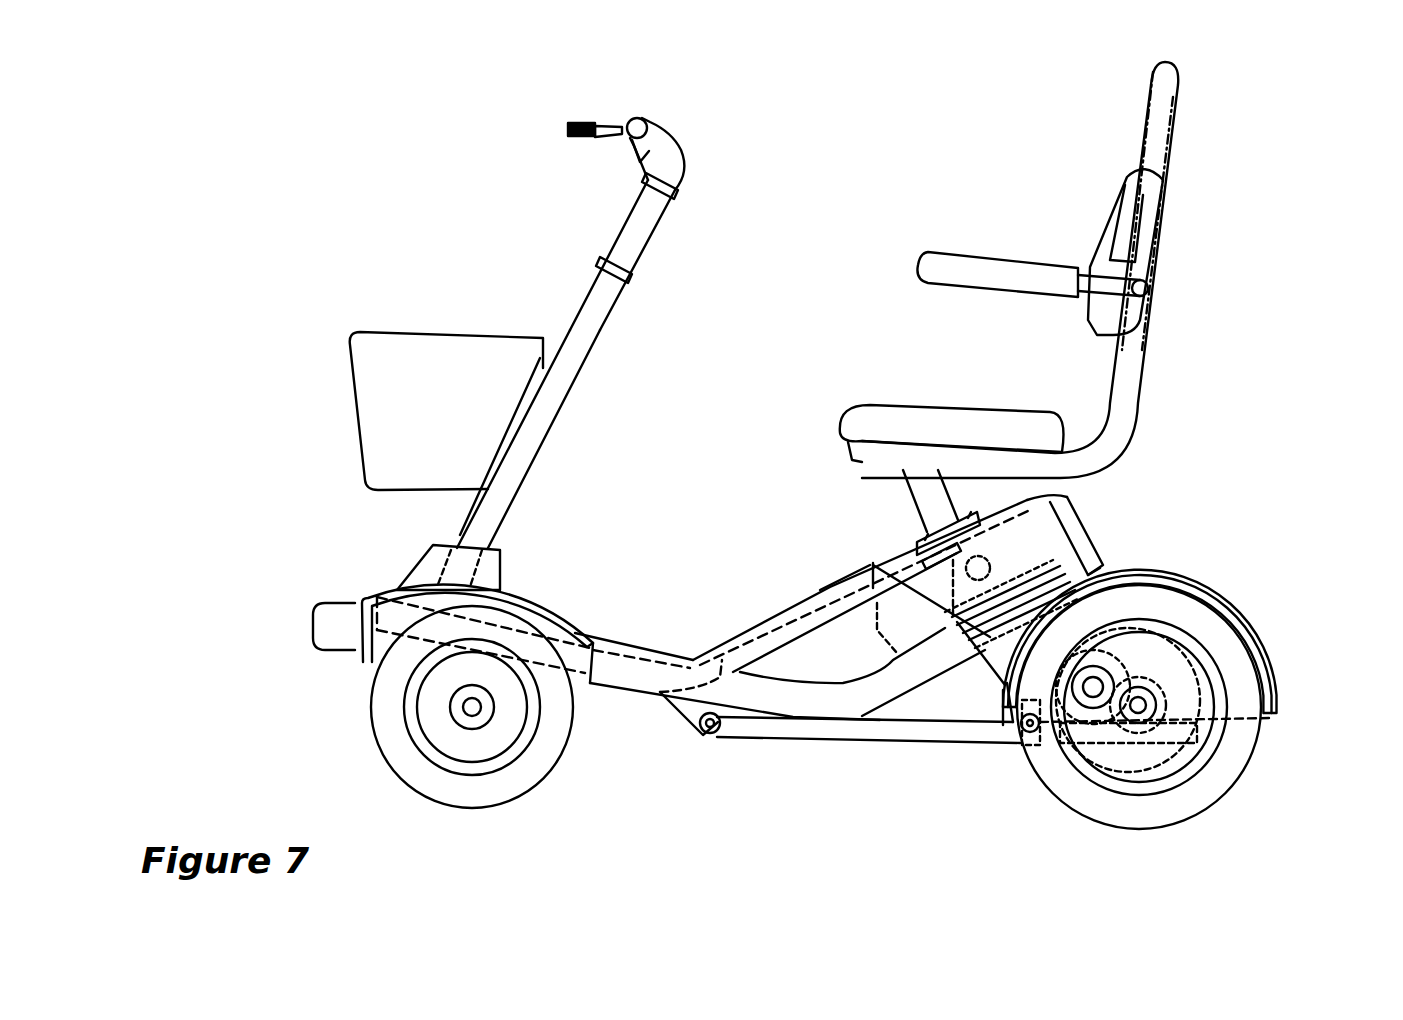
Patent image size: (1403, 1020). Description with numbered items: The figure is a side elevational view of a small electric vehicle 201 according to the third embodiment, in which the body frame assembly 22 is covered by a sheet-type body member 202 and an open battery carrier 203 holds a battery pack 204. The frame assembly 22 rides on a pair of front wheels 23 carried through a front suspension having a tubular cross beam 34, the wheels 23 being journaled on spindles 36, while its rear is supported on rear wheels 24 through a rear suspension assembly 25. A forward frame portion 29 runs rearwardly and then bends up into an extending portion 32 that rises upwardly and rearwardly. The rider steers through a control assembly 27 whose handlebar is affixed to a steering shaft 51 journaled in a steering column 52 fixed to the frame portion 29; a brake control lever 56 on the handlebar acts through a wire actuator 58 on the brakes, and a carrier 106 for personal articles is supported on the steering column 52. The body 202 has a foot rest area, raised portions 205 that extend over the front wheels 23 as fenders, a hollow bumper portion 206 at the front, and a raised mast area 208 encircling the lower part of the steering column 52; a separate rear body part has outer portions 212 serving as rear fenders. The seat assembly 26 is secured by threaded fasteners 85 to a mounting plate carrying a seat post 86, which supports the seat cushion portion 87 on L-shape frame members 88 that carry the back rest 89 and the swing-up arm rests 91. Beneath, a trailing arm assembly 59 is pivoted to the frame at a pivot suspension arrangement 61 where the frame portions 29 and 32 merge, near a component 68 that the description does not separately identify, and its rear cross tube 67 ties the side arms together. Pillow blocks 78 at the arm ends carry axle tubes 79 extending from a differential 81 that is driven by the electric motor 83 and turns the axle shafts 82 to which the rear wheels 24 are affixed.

The small vehicle 201 is at (462, 178).
The control assembly 27 is at (706, 104).
The L-shape frame members 88 is at (688, 152).
The wire actuator 58 is at (630, 118).
The brake control lever 56 is at (580, 122).
The steering shaft 51 is at (648, 232).
The steering column 52 is at (556, 422).
The carrier 106 is at (403, 333).
The seat assembly 26 is at (852, 378).
The seat cushion portion 87 is at (935, 400).
The back rest 89 is at (1100, 222).
The arm rests 91 is at (975, 252).
The seat post 86 is at (897, 487).
The body frame assembly 22 is at (777, 595).
The battery carrier 203 is at (1040, 505).
The battery pack 204 is at (1084, 530).
The threaded fasteners 85 is at (913, 540).
The extending portion 32 is at (820, 590).
The axle tubes 79 is at (998, 666).
The electric motor 83 is at (1080, 762).
The frame portion 29 is at (593, 647).
The body member 202 is at (606, 640).
The raised mast area 208 is at (420, 560).
The raised portions 205 is at (535, 600).
The hollow bumper portion 206 is at (313, 622).
The tubular cross beam 34 is at (342, 688).
The front wheels 23 is at (556, 768).
The spindles 36 is at (470, 714).
The pivot bracket 68 is at (683, 700).
The pivot suspension arrangement 61 is at (705, 738).
The trailing arm assembly 59 is at (795, 733).
The cross tube 67 is at (1032, 738).
The rear wheels 24 is at (1255, 780).
The axle shafts 82 is at (1140, 712).
The differential 81 is at (1180, 655).
The pillow block 78 is at (1150, 712).
The outer portions 212 is at (1276, 688).
The rear suspension assembly 25 is at (1240, 592).